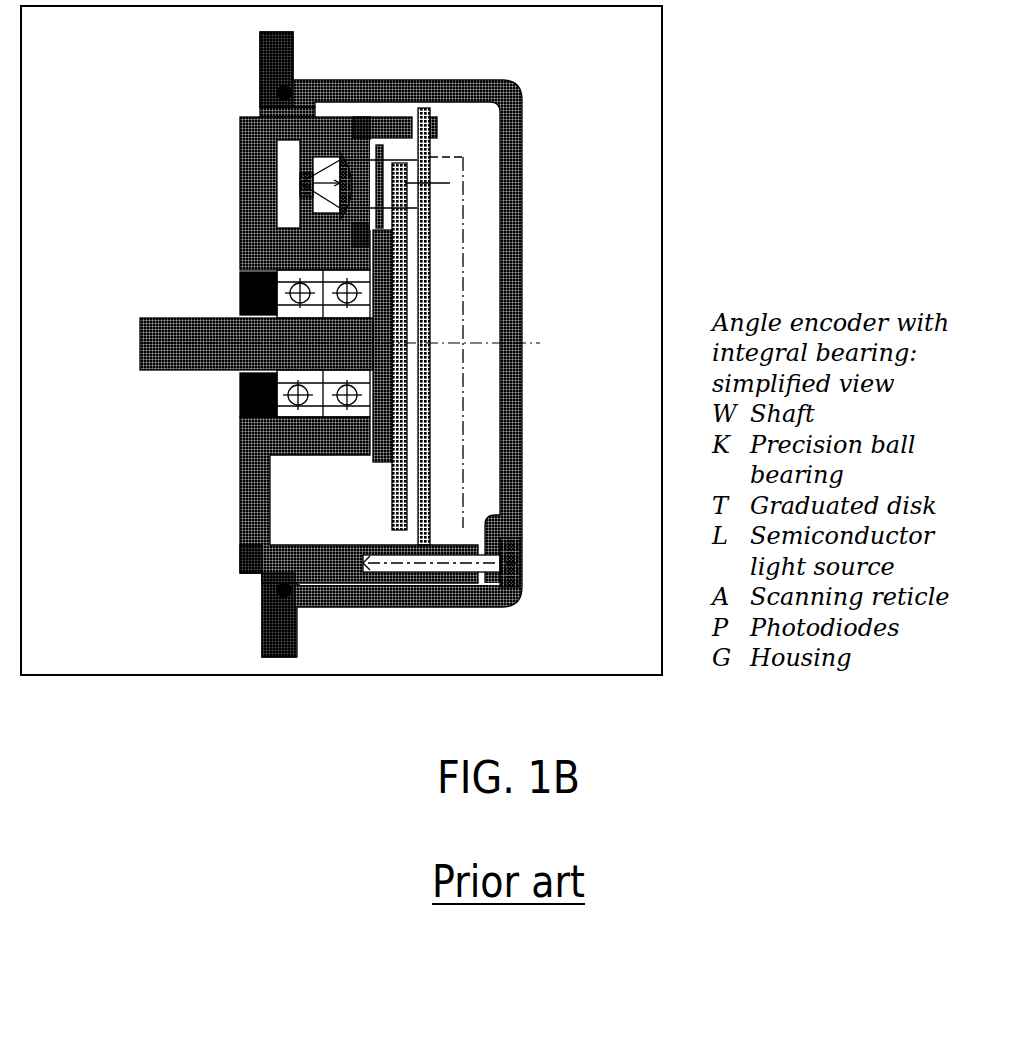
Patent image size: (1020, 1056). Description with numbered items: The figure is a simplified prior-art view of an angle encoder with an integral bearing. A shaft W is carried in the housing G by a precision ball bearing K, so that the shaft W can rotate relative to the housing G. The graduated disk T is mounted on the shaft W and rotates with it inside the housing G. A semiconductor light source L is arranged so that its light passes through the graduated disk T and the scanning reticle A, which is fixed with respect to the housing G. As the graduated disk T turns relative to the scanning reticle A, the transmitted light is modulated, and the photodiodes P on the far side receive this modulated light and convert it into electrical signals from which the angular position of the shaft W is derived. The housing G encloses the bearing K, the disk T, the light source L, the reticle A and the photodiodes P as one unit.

The shaft W is at (213, 332).
The precision ball bearing K is at (300, 402).
The graduated disk T is at (397, 492).
The semiconductor light source L is at (297, 182).
The scanning reticle A is at (376, 140).
The photodiodes P is at (418, 165).
The housing G is at (458, 90).